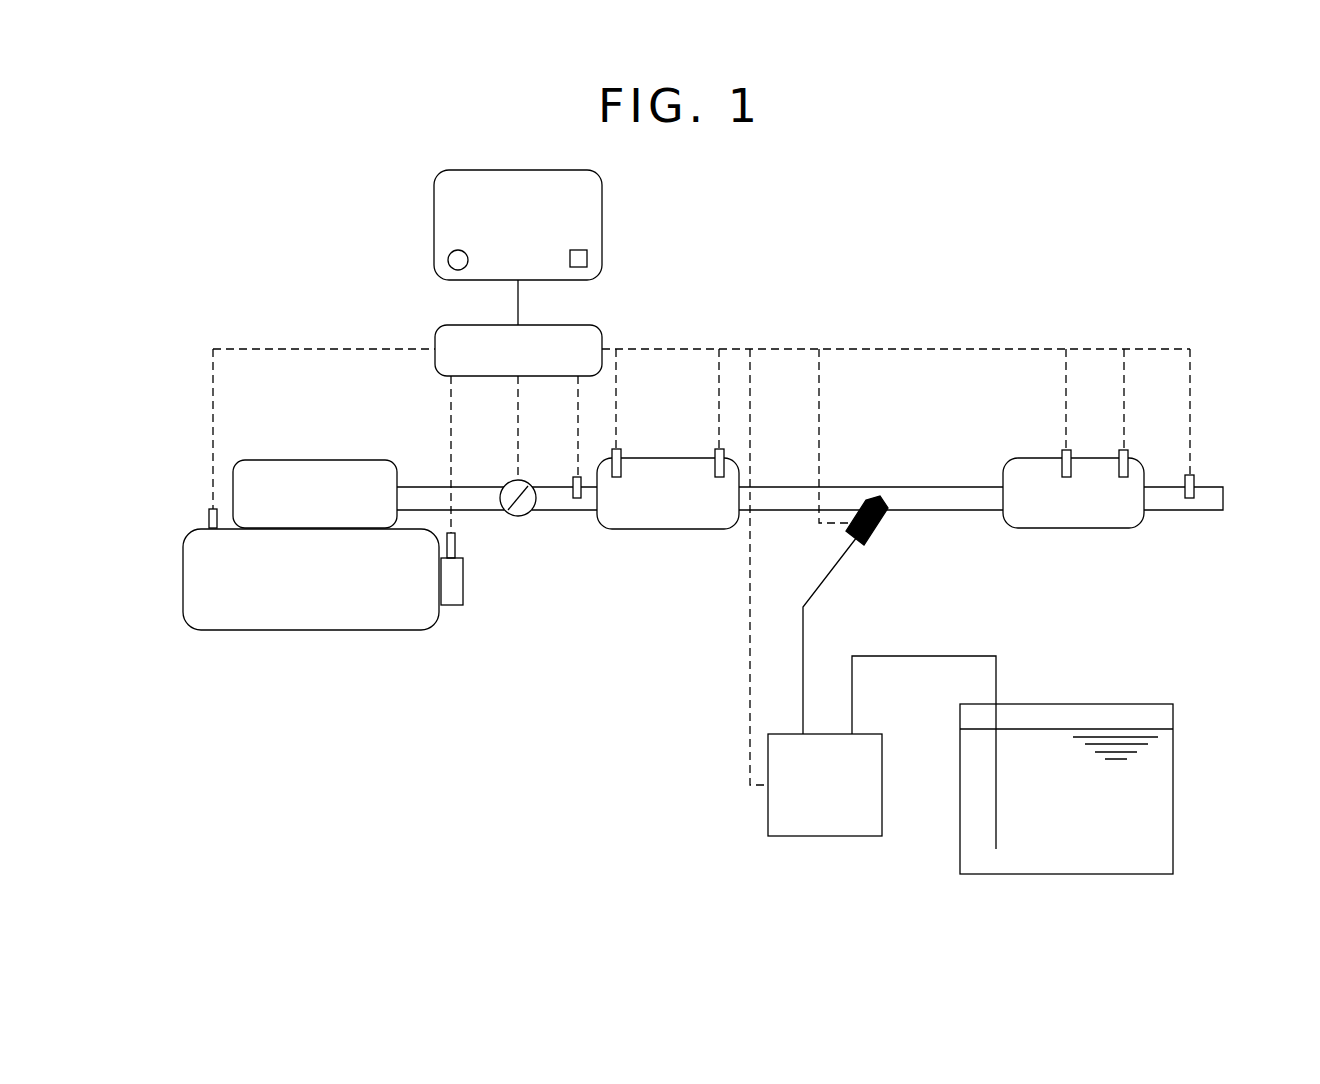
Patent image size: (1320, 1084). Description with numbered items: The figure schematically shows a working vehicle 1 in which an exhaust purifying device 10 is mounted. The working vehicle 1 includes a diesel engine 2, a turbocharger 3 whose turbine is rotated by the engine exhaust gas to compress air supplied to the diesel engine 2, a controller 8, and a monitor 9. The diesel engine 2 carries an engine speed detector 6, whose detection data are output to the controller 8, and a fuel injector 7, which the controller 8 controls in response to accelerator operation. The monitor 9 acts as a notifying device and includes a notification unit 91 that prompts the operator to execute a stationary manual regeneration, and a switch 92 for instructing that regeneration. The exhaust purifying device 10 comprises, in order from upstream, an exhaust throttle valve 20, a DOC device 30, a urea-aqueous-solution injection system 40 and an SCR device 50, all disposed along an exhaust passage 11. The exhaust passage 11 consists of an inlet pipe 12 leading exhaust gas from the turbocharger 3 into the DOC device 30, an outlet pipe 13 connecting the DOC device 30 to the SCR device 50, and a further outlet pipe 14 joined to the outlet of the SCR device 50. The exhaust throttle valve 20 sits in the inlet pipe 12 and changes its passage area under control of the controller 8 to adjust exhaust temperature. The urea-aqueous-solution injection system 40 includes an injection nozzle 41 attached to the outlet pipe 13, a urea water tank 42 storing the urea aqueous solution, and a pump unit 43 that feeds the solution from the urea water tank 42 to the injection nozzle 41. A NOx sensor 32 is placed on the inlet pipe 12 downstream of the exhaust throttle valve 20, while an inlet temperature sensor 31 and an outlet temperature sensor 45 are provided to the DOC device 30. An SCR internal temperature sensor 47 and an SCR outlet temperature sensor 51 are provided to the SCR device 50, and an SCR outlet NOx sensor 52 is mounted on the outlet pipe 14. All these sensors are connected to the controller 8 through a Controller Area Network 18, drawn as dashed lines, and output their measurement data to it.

The working vehicle 1 is at (280, 200).
The diesel engine 2 is at (397, 630).
The turbocharger 3 is at (364, 460).
The engine speed detector 6 is at (456, 545).
The fuel injector 7 is at (207, 514).
The controller 8 is at (603, 337).
The monitor 9 is at (583, 170).
The notification unit 91 is at (447, 262).
The switch 92 is at (590, 260).
The exhaust purifying device 10 is at (576, 643).
The exhaust passage 11 is at (970, 487).
The inlet pipe 12 is at (416, 487).
The outlet pipe 13 is at (912, 487).
The outlet pipe 14 is at (1210, 512).
The Controller Area Network (CAN) 18 is at (899, 349).
The exhaust throttle valve 20 is at (530, 515).
The DOC device 30 is at (665, 529).
The inlet temperature sensor 31 is at (622, 452).
The NOx sensor 32 is at (573, 477).
The urea-aqueous-solution injection system 40 is at (795, 848).
The injection nozzle 41 is at (885, 525).
The urea water tank 42 is at (1173, 762).
The pump unit 43 is at (862, 836).
The outlet temperature sensor 45 is at (714, 452).
The SCR internal temperature sensor 47 is at (1060, 452).
The SCR device 50 is at (1093, 528).
The SCR outlet temperature sensor 51 is at (1130, 453).
The SCR outlet NOx sensor 52 is at (1193, 475).